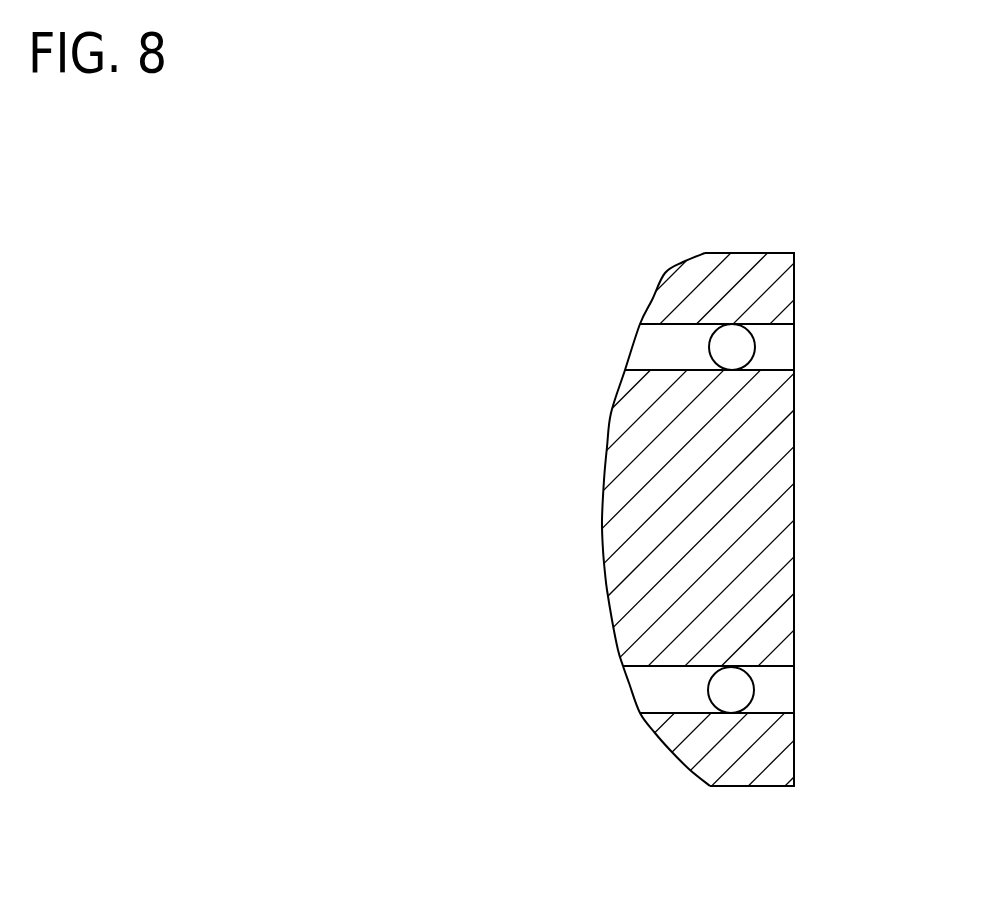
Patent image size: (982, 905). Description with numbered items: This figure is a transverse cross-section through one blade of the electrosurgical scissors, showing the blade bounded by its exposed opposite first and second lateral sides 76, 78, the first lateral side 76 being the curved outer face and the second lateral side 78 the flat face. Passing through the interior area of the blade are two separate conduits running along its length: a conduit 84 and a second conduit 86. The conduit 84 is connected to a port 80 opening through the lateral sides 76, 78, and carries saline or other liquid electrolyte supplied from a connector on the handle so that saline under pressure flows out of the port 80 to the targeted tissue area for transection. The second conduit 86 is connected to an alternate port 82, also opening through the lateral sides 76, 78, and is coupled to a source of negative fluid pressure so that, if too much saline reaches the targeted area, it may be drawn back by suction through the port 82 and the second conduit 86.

The first lateral side 76 is at (602, 527).
The second lateral side 78 is at (795, 538).
The port 80 is at (660, 698).
The port 82 is at (660, 348).
The conduit 84 is at (731, 692).
The second conduit 86 is at (731, 348).